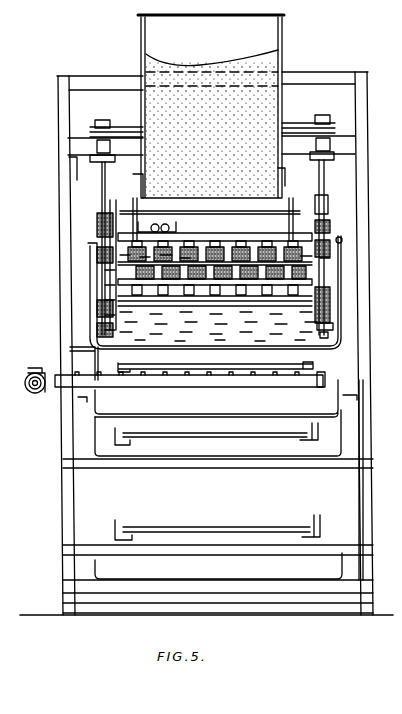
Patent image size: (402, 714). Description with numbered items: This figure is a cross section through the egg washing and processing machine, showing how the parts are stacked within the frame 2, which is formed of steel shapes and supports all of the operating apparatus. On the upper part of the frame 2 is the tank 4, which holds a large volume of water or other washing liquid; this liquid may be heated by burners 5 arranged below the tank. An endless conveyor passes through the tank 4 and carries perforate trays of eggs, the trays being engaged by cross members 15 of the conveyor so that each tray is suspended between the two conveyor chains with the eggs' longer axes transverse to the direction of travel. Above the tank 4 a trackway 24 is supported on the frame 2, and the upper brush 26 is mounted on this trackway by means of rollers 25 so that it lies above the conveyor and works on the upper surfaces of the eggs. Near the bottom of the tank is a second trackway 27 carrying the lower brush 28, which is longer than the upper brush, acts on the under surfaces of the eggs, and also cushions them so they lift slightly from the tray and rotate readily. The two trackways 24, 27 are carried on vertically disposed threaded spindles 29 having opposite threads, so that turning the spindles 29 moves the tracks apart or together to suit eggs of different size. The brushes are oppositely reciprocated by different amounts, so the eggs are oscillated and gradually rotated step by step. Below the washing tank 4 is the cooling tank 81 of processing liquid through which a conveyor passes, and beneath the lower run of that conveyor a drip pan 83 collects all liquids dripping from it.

The frame 2 is at (60, 184).
The tank 4 is at (172, 342).
The burners 5 is at (229, 381).
The cross members 15 is at (196, 367).
The trackway 24 is at (326, 232).
The rollers 25 is at (325, 202).
The upper brush 26 is at (232, 242).
The trackway 27 is at (318, 323).
The lower brush 28 is at (265, 287).
The threaded spindles 29 is at (103, 197).
The cooling tank 81 is at (190, 448).
The drip pan 83 is at (307, 573).